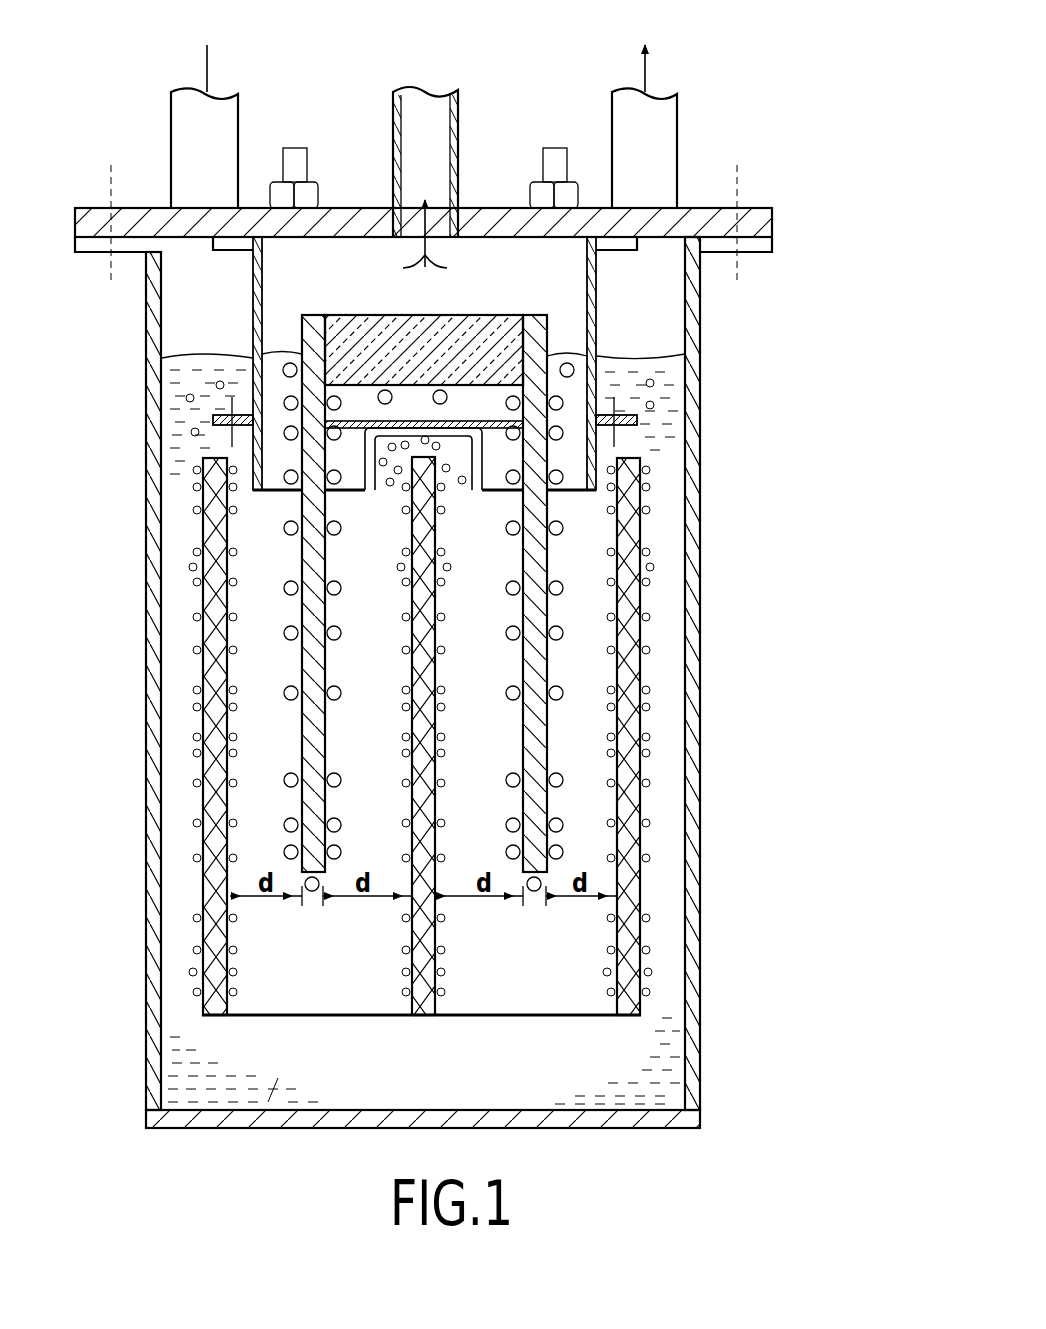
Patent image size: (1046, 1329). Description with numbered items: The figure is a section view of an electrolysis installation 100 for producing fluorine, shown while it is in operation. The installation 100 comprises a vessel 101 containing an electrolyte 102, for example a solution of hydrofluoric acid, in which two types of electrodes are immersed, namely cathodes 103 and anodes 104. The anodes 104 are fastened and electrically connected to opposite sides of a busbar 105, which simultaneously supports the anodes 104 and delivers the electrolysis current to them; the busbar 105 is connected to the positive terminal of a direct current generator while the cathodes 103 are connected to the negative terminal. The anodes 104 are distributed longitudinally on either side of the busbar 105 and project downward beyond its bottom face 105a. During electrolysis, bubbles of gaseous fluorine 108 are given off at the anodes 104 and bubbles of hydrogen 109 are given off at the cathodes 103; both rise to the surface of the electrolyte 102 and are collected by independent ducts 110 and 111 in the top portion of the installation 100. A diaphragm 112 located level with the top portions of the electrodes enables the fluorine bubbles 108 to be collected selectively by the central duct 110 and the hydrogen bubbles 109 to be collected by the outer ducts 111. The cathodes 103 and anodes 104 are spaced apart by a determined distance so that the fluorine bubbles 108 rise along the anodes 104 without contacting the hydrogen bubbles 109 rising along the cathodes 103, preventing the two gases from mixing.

The electrolysis installation 100 is at (838, 102).
The vessel 101 is at (693, 706).
The electrolyte 102 is at (635, 380).
The cathodes 103 is at (212, 937).
The anodes 104 is at (312, 730).
The busbar 105 is at (462, 316).
The bottom face of the busbar 105a is at (340, 387).
The bubbles of gaseous fluorine 108 is at (440, 400).
The bubbles of hydrogen 109 is at (108, 882).
The duct 110 is at (458, 127).
The ducts 111 is at (182, 130).
The diaphragm 112 is at (232, 424).